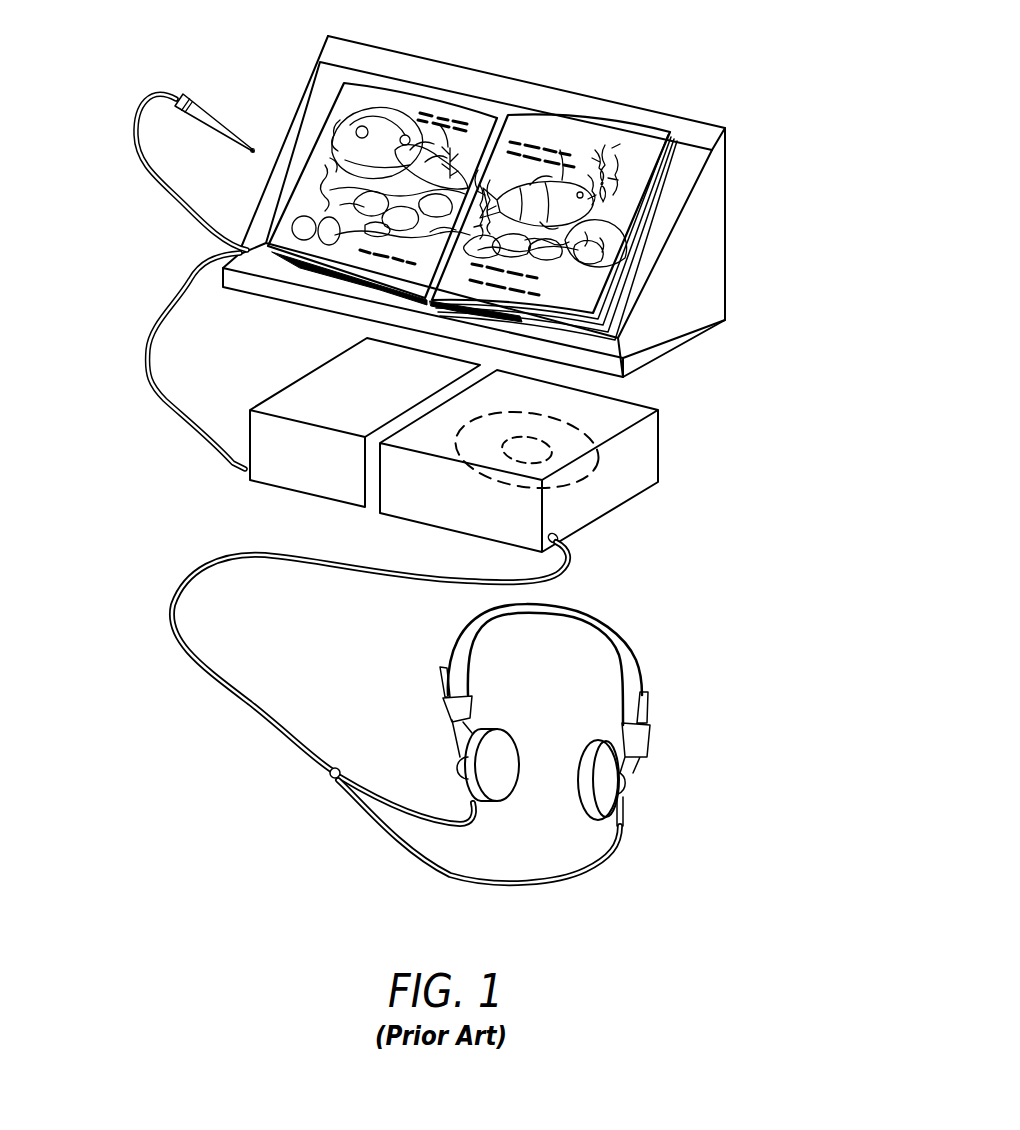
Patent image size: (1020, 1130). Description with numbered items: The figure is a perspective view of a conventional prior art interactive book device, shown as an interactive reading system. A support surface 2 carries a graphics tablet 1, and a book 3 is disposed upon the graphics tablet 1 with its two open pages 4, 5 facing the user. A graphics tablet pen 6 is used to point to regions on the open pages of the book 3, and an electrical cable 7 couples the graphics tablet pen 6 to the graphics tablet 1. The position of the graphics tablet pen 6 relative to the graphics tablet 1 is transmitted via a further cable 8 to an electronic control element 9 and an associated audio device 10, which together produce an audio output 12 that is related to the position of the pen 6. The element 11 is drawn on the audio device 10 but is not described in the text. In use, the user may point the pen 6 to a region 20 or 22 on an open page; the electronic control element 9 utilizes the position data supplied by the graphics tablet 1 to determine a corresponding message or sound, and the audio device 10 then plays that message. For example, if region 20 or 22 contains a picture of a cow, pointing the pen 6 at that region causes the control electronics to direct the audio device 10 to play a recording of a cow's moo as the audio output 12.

The graphics tablet 1 is at (320, 61).
The support surface 2 is at (260, 288).
The book 3 is at (487, 103).
The open page 4 is at (295, 207).
The open page 5 is at (597, 258).
The graphics tablet pen 6 is at (197, 103).
The electrical cable 7 is at (148, 173).
The cable 8 is at (146, 365).
The electronic control element 9 is at (273, 478).
The audio device 10 is at (660, 447).
The disc 11 is at (480, 477).
The audio output 12 is at (617, 633).
The region 20 is at (303, 240).
The region 22 is at (327, 245).